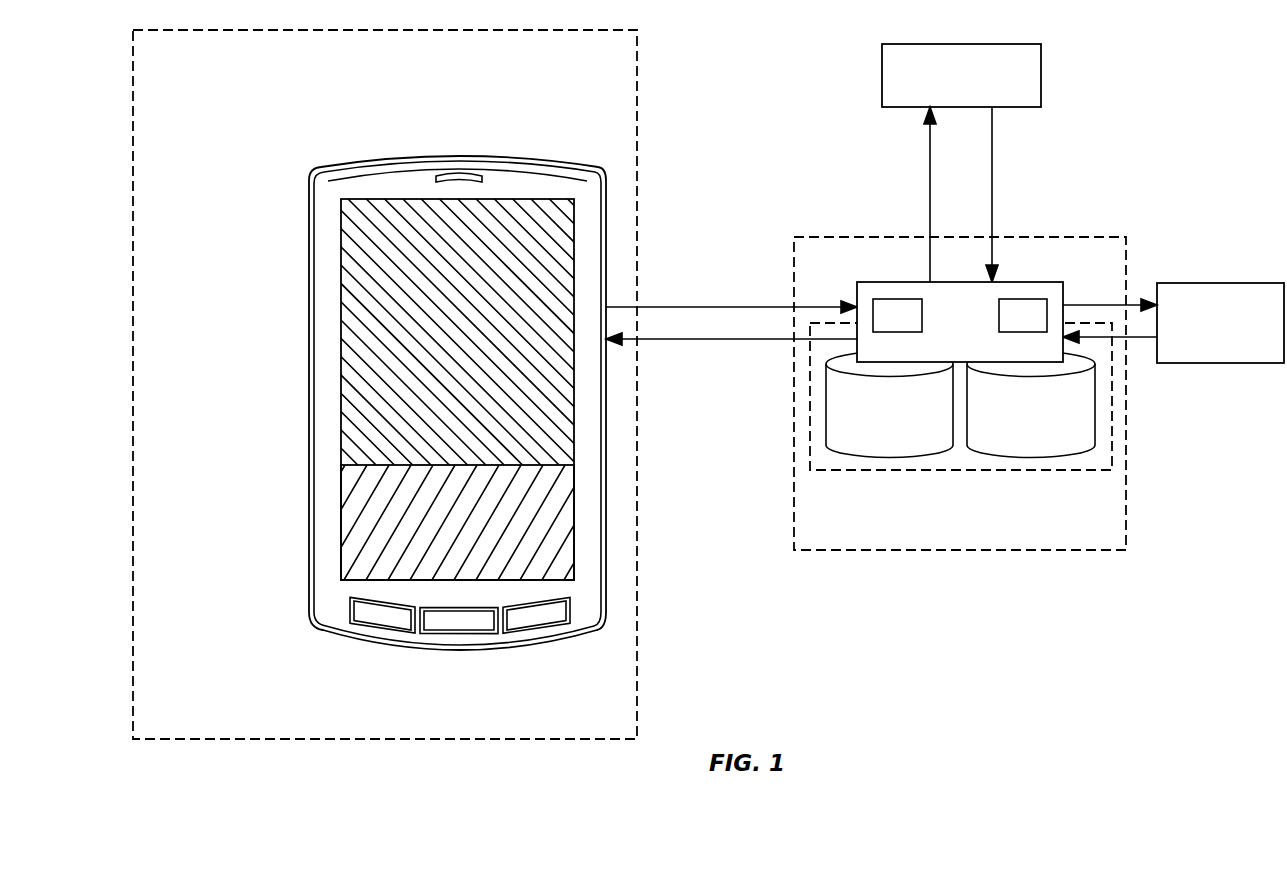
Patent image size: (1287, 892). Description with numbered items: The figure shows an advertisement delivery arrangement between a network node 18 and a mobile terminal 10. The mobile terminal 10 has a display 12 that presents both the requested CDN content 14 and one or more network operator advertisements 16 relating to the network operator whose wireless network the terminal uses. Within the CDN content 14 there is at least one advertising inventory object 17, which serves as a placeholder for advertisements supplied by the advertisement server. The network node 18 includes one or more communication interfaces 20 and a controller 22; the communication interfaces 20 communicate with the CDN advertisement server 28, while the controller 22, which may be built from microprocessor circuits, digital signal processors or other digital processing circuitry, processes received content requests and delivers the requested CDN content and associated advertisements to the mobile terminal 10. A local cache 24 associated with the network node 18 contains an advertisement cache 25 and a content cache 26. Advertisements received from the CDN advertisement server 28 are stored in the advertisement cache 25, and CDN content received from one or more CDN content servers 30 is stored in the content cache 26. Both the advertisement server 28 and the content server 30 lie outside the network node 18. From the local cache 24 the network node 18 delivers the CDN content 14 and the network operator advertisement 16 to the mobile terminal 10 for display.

The mobile terminal 10 is at (323, 138).
The display 12 is at (342, 273).
The CDN content 14 is at (391, 320).
The network operator advertisement 16 is at (375, 535).
The advertising inventory object 17 is at (342, 585).
The network node 18 is at (951, 536).
The communication interface 20 is at (888, 323).
The controller 22 is at (1014, 323).
The local cache 24 is at (1082, 471).
The advertisement cache 25 is at (880, 445).
The content cache 26 is at (1022, 443).
The CDN advertisement server 28 is at (952, 96).
The CDN content server 30 is at (1211, 350).